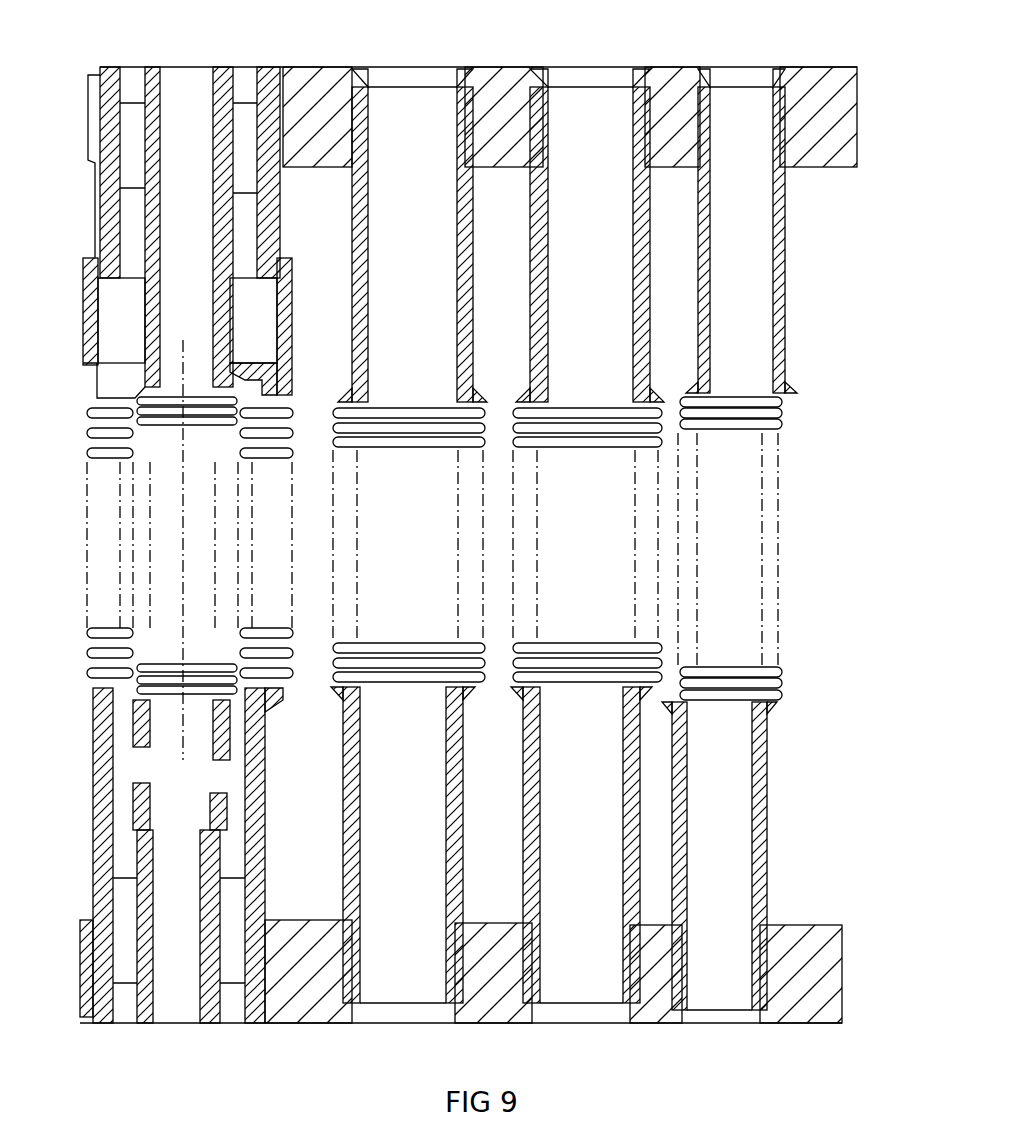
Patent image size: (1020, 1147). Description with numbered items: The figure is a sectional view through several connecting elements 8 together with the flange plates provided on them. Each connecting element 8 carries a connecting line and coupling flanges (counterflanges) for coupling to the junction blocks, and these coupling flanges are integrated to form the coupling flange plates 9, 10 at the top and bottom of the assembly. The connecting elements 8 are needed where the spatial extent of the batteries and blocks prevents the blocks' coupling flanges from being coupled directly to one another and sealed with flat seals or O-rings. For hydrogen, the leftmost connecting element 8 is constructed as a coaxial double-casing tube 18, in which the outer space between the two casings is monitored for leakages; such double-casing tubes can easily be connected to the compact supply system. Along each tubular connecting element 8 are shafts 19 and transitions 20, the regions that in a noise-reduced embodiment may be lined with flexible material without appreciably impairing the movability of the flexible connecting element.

The connecting element 8 is at (183, 232).
The coupling flange plate 9 is at (820, 98).
The coupling flange plate 10 is at (808, 962).
The coaxial double-casing tube 18 is at (80, 548).
The shaft 19 is at (778, 412).
The transition 20 is at (83, 322).